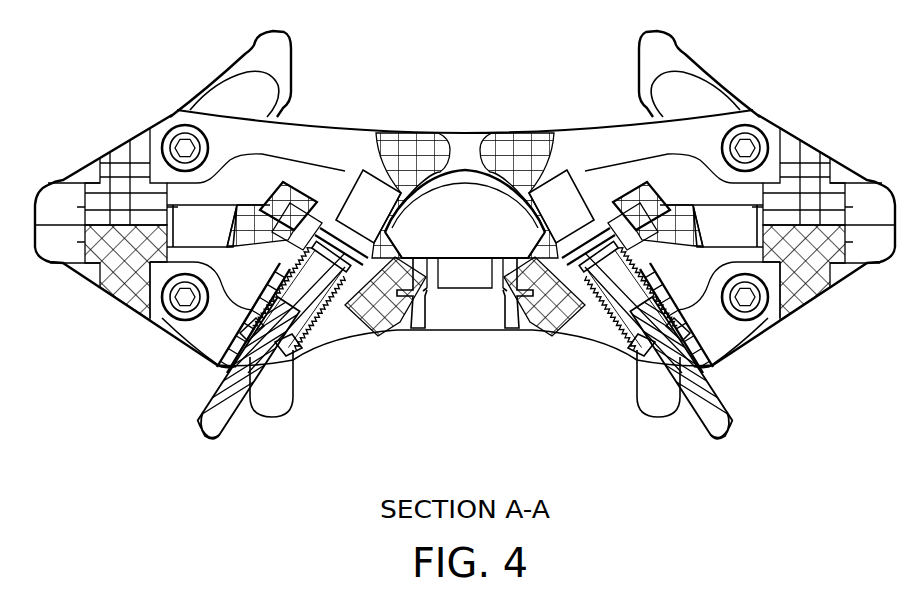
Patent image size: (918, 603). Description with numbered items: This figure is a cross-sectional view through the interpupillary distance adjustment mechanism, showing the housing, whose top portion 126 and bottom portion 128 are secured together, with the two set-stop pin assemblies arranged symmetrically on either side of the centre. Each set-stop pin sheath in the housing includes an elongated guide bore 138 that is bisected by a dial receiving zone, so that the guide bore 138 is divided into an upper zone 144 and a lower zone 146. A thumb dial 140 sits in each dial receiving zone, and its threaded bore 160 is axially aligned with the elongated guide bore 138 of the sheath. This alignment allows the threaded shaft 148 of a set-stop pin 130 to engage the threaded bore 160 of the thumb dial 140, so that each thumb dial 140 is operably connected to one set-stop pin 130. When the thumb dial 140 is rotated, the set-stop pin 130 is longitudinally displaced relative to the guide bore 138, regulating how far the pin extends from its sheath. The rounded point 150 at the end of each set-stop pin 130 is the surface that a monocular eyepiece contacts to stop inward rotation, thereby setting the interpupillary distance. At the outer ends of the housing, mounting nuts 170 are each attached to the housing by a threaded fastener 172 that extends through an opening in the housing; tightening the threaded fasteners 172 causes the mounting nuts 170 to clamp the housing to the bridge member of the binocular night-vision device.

The top portion 126 is at (459, 143).
The bottom portion 128 is at (87, 273).
The set-stop pin 130 is at (228, 403).
The elongated guide bore 138 is at (535, 226).
The thumb dial 140 is at (390, 328).
The upper zone 144 is at (363, 197).
The lower zone 146 is at (293, 358).
The threaded shaft 148 is at (335, 332).
The rounded point 150 is at (203, 430).
The threaded bore 160 is at (340, 238).
The mounting nut 170 is at (240, 70).
The threaded fastener 172 is at (177, 135).